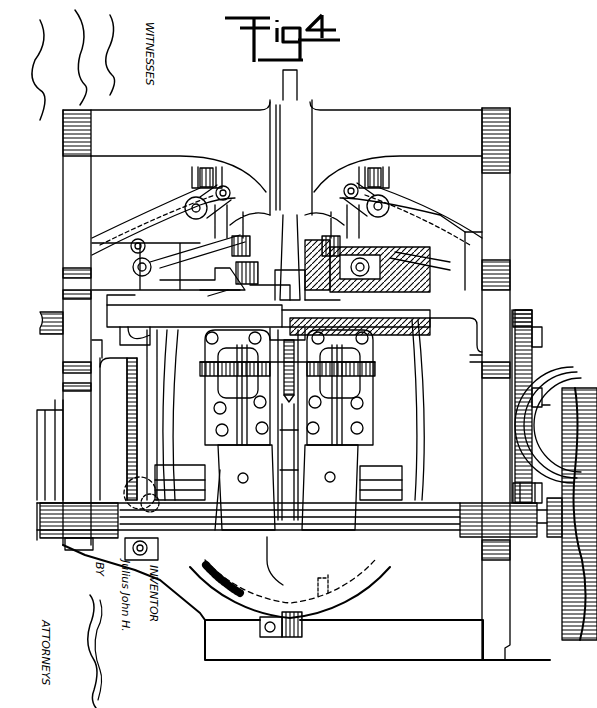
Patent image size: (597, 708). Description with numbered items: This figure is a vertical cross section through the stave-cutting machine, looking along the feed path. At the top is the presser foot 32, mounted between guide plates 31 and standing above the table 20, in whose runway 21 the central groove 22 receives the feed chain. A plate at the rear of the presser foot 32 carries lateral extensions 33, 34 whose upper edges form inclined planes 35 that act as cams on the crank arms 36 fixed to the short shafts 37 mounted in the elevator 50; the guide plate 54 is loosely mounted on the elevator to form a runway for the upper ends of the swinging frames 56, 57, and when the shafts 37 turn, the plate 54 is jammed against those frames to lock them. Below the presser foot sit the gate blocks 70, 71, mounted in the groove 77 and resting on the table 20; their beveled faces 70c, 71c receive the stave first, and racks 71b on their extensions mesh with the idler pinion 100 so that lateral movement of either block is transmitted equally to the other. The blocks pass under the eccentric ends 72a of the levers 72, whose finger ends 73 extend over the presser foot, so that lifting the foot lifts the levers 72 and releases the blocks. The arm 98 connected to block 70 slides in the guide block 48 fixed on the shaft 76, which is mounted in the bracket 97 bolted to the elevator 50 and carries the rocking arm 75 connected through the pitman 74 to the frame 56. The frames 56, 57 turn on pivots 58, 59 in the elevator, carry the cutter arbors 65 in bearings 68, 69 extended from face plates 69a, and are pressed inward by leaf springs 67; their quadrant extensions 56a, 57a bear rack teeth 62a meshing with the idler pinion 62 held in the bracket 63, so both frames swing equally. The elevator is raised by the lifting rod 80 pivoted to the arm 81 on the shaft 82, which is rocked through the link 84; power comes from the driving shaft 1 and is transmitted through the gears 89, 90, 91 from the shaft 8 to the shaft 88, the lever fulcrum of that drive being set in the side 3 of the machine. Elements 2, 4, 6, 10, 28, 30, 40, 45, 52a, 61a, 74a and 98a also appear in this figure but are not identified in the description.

The driving shaft 1 is at (440, 518).
The frame side 2 is at (64, 154).
The side of the machine 3 is at (498, 176).
The gear 4 is at (560, 603).
The bolt 6 is at (50, 330).
The shaft 8 is at (543, 336).
The slide 10 is at (330, 398).
The table 20 is at (268, 309).
The runway 21 is at (217, 313).
The groove 22 is at (268, 298).
The plate 28 is at (287, 331).
The top frame 30 is at (395, 118).
The guide plates 31 is at (285, 128).
The presser foot 32 is at (299, 78).
The lateral extension 33 is at (246, 186).
The lateral extension 34 is at (328, 184).
The inclined planes 35 is at (262, 182).
The crank arms 36 is at (190, 198).
The short shafts 37 is at (190, 195).
The post 40 is at (194, 172).
The spring 45 is at (206, 166).
The guide block 48 is at (182, 455).
The elevator 50 is at (108, 228).
The spring 52a is at (251, 273).
The guide plate 54 is at (134, 195).
The swinging frame 56 is at (282, 552).
The quadrant extension 56a is at (190, 575).
The swinging frame 57 is at (390, 550).
The quadrant extension 57a is at (342, 598).
The pivot 58 is at (240, 481).
The pivot 59 is at (328, 481).
The cross bar 61a is at (382, 366).
The idler pinion 62 is at (400, 428).
The rack teeth 62a is at (225, 592).
The bracket 63 is at (268, 638).
The arbors 65 is at (433, 378).
The leaf springs 67 is at (434, 441).
The bearings 68 is at (374, 395).
The bearings 69 is at (382, 393).
The face plate 69a is at (376, 409).
The gate block 70 is at (134, 275).
The beveled face 70c is at (235, 296).
The gate block 71 is at (410, 256).
The racks 71b is at (432, 280).
The beveled face 71c is at (324, 296).
The levers 72 is at (184, 278).
The eccentric ends 72a is at (472, 240).
The finger ends 73 is at (292, 216).
The pitman 74 is at (155, 332).
The bar 74a is at (125, 307).
The rocking arm 75 is at (126, 430).
The shaft 76 is at (196, 446).
The groove 77 is at (495, 270).
The lifting rod 80 is at (285, 458).
The arm 81 is at (288, 425).
The shaft 82 is at (55, 440).
The link 84 is at (45, 430).
The shaft 88 is at (376, 488).
The gear 89 is at (532, 470).
The gear 90 is at (533, 372).
The gear 91 is at (534, 314).
The bracket 97 is at (118, 496).
The arm 98 is at (132, 392).
The roller 98a is at (130, 252).
The idler pinion 100 is at (412, 322).